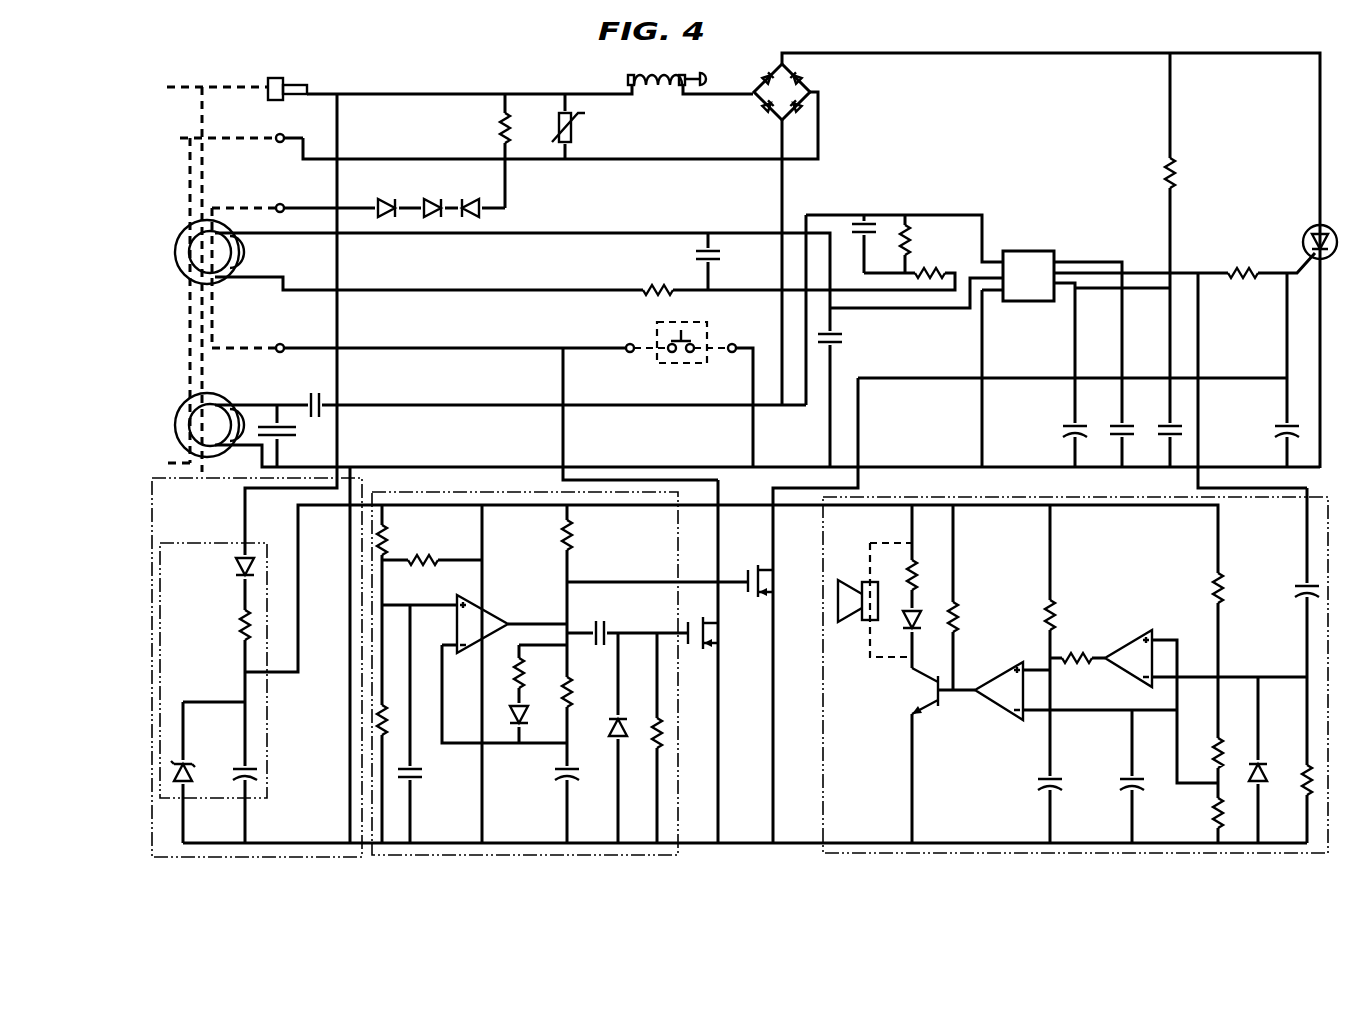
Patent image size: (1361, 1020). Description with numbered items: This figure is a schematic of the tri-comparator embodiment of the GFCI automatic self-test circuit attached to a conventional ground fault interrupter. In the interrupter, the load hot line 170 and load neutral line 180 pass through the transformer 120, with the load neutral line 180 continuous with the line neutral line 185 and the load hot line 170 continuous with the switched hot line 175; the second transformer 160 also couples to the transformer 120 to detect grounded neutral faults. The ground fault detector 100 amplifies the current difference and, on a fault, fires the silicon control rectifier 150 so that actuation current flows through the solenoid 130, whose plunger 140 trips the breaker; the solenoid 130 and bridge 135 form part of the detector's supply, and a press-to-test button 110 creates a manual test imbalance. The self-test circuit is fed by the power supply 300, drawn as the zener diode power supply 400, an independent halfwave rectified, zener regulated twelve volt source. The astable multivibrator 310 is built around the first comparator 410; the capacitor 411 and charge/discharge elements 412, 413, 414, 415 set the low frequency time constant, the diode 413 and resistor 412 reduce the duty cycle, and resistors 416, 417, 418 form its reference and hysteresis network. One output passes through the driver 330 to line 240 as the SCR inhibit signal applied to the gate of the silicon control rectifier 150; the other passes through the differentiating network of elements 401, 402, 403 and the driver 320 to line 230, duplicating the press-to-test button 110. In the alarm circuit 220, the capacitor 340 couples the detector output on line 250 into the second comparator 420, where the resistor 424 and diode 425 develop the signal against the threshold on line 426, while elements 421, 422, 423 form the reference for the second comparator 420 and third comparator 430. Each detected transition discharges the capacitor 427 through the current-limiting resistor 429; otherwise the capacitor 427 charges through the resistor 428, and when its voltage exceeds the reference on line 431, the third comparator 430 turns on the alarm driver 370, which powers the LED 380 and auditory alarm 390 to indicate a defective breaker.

The ground fault detector 100 is at (1028, 251).
The press-to-test button 110 is at (657, 332).
The transformer 120 is at (176, 255).
The solenoid 130 is at (628, 80).
The bridge 135 is at (776, 120).
The plunger 140 is at (708, 78).
The silicon control rectifier 150 is at (1303, 244).
The second transformer 160 is at (218, 398).
The load hot line 170 is at (200, 472).
The switched hot line 175 is at (167, 87).
The load neutral line 180 is at (190, 460).
The line neutral line 185 is at (190, 163).
The alarm circuit 220 is at (822, 833).
The line 230 is at (562, 437).
The line 240 is at (912, 380).
The line 250 is at (1200, 340).
The power supply 300 is at (152, 528).
The astable multivibrator 310 is at (678, 833).
The driver 320 is at (722, 628).
The driver 330 is at (775, 583).
The capacitor 340 is at (1297, 593).
The alarm driver 370 is at (913, 693).
The LED 380 is at (917, 612).
The auditory alarm 390 is at (845, 622).
The zener diode power supply 400 is at (233, 543).
The differentiating network element 401 is at (605, 628).
The differentiating network element 402 is at (618, 740).
The differentiating network element 403 is at (665, 728).
The first comparator 410 is at (490, 608).
The capacitor 411 is at (575, 785).
The resistor 412 is at (515, 670).
The diode 413 is at (512, 725).
The charge/discharge element 414 is at (577, 690).
The charge/discharge element 415 is at (577, 530).
The resistor 416 is at (392, 535).
The resistor 417 is at (412, 560).
The resistor 418 is at (380, 718).
The second comparator 420 is at (1125, 642).
The voltage reference element 421 is at (1212, 585).
The voltage reference element 422 is at (1212, 755).
The voltage reference element 423 is at (1212, 818).
The resistor 424 is at (1302, 782).
The diode 425 is at (1260, 762).
The line 426 is at (1167, 640).
The capacitor 427 is at (1045, 785).
The resistor 428 is at (1045, 612).
The resistor 429 is at (1073, 665).
The third comparator 430 is at (1007, 667).
The line 431 is at (1085, 713).